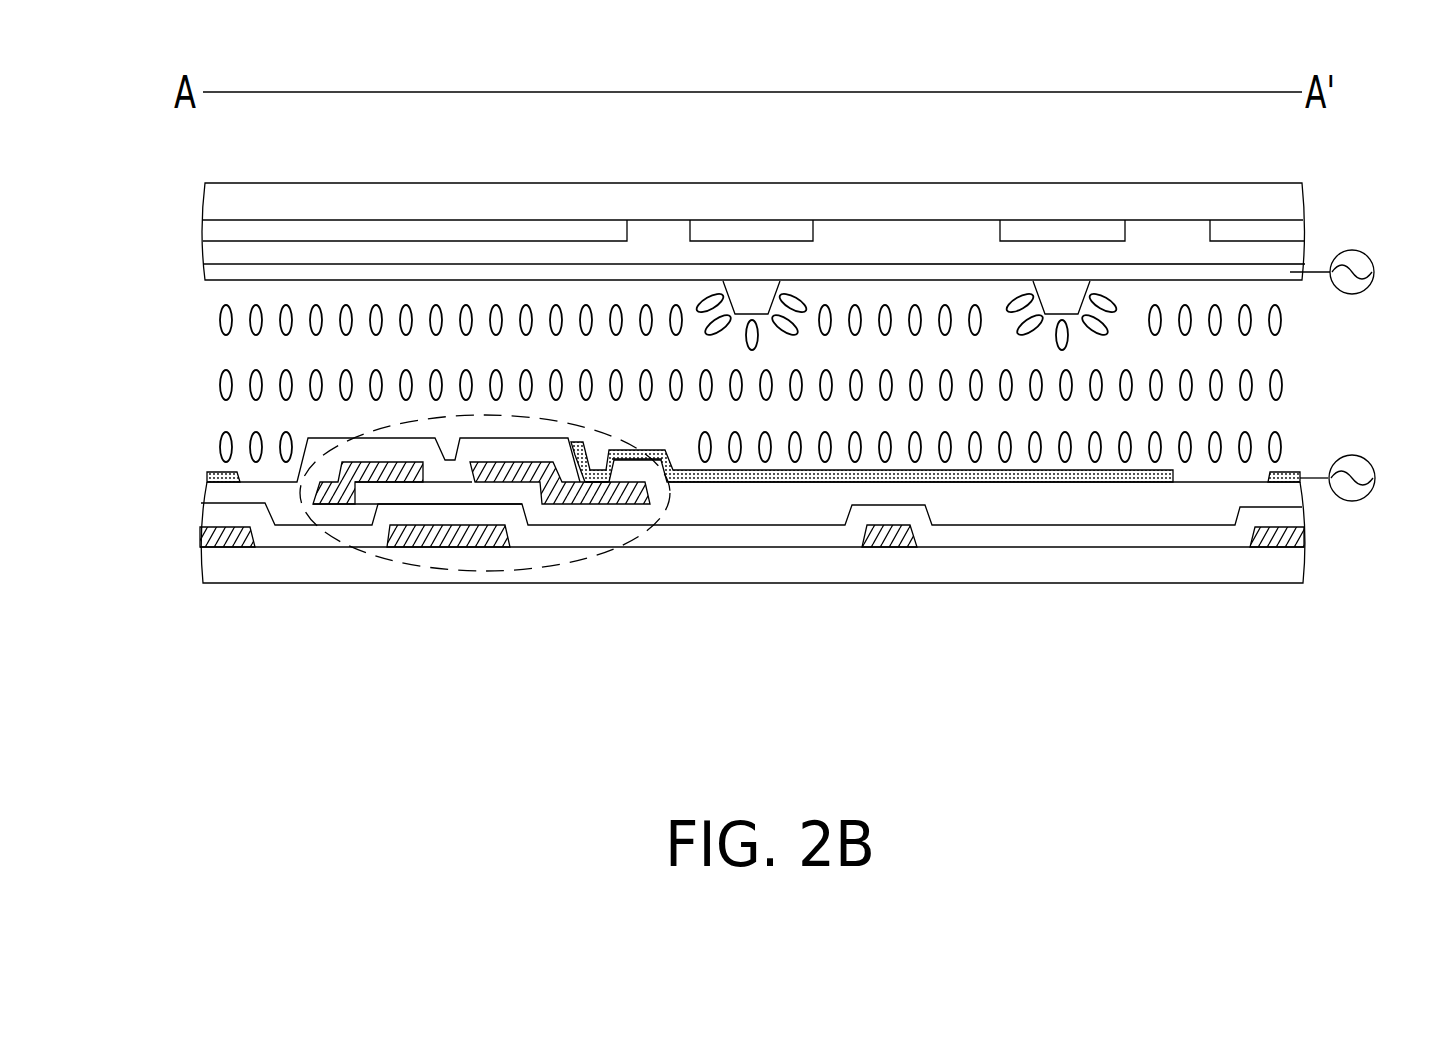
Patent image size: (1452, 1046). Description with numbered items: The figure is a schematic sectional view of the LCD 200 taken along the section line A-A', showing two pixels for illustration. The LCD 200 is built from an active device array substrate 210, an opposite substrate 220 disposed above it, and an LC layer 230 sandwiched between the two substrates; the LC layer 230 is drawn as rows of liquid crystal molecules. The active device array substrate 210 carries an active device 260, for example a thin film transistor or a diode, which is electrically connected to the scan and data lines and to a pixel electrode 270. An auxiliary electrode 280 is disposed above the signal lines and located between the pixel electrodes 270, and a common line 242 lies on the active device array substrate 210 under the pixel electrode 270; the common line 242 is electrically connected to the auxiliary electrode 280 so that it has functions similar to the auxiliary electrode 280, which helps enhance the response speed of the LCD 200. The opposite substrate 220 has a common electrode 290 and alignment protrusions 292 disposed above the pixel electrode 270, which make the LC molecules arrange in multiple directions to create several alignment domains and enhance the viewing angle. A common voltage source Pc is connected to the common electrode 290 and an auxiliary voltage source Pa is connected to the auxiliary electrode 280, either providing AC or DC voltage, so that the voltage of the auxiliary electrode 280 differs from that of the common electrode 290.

The LCD 200 is at (1388, 745).
The active device array substrate 210 is at (698, 544).
The opposite substrate 220 is at (168, 183).
The LC layer 230 is at (687, 294).
The common line 242 is at (238, 540).
The active device 260 is at (546, 568).
The pixel electrode 270 is at (757, 478).
The auxiliary electrode 280 is at (223, 481).
The common electrode 290 is at (1183, 272).
The alignment protrusion 292 is at (1063, 296).